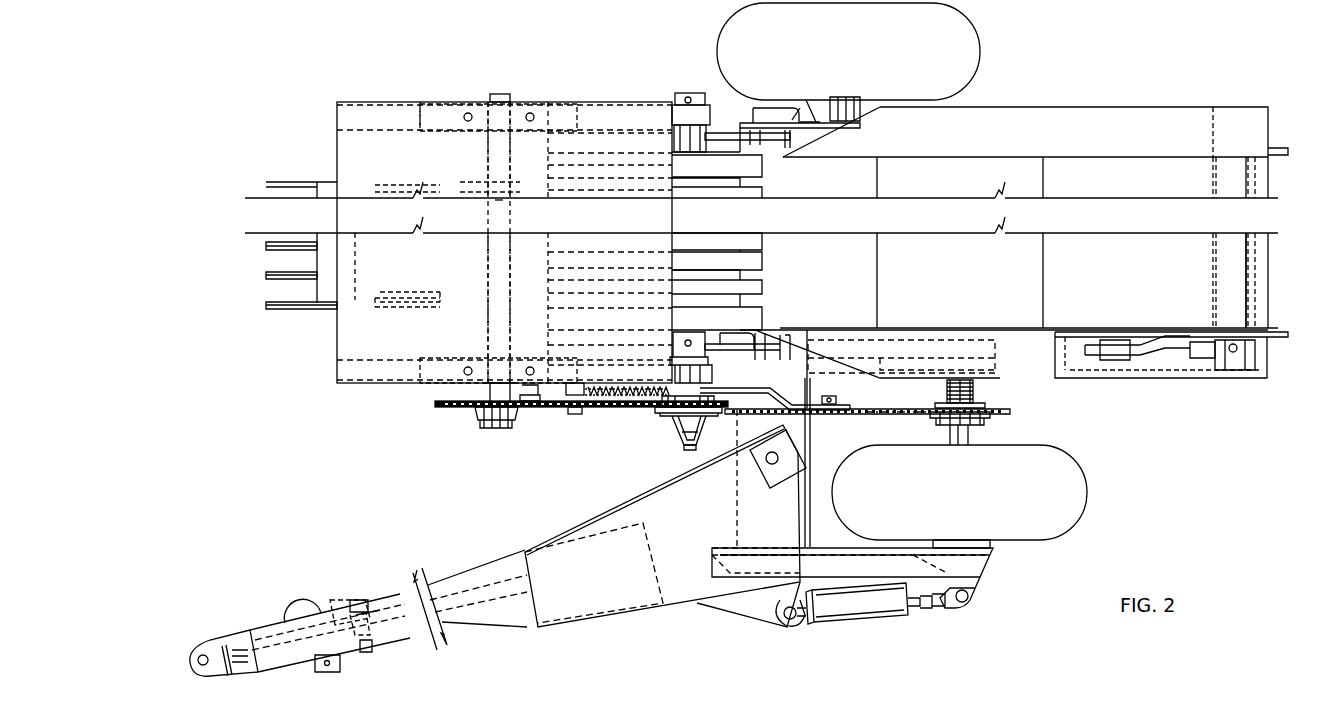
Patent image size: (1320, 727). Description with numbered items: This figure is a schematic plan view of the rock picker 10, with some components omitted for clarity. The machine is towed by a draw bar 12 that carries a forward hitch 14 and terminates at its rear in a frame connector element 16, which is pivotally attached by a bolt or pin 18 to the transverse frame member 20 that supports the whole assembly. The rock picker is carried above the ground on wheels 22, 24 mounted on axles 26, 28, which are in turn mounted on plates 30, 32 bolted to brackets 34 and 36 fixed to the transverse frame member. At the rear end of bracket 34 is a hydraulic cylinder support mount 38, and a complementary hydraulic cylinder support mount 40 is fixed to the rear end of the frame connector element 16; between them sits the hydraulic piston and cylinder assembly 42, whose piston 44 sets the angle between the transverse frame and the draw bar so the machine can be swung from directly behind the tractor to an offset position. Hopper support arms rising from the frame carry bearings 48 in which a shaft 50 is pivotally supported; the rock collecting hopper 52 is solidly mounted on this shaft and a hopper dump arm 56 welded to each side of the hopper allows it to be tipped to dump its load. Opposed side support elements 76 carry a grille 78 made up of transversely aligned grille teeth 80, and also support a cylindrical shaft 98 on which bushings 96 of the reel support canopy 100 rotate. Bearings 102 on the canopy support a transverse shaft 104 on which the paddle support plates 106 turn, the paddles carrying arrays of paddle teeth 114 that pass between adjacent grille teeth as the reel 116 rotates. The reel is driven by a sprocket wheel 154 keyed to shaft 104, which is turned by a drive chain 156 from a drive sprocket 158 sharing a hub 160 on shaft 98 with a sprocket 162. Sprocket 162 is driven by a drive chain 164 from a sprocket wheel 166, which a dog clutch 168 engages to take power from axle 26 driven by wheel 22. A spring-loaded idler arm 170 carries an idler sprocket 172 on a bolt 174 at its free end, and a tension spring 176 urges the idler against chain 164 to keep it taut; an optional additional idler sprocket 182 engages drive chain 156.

The rock picker 10 is at (704, 635).
The draw bar 12 is at (476, 556).
The forward hitch 14 is at (199, 643).
The frame connector element 16 is at (600, 526).
The bolt or pin 18 is at (785, 470).
The transverse frame member 20 is at (811, 495).
The wheel 22 is at (1060, 452).
The wheel 24 is at (978, 59).
The axle 26 is at (968, 436).
The axle 28 is at (850, 96).
The plate 30 is at (991, 542).
The plate 32 is at (850, 115).
The bracket 34 is at (817, 348).
The bracket 36 is at (818, 82).
The hydraulic cylinder support mount 38 is at (976, 578).
The hydraulic cylinder support mount 40 is at (756, 608).
The hydraulic piston and cylinder assembly 42 is at (876, 616).
The piston 44 is at (935, 606).
The bearing 48 is at (1268, 350).
The shaft 50 is at (1238, 295).
The rock collecting hopper 52 is at (1200, 272).
The hopper dump arm 56 is at (1148, 352).
The side support element 76 is at (723, 112).
The grille 78 is at (742, 288).
The grille tooth 80 is at (762, 264).
The bushing 96 is at (710, 96).
The cylindrical shaft 98 is at (670, 92).
The reel support canopy 100 is at (609, 100).
The bearing 102 is at (484, 72).
The transverse shaft 104 is at (486, 261).
The paddle support plate 106 is at (452, 194).
The paddle teeth 114 is at (276, 276).
The reel 116 is at (325, 329).
The sprocket wheel 154 is at (480, 408).
The drive chain 156 is at (546, 410).
The drive sprocket 158 is at (657, 415).
The hub 160 is at (684, 448).
The sprocket 162 is at (668, 424).
The drive chain 164 is at (871, 408).
The sprocket wheel 166 is at (986, 414).
The dog clutch 168 is at (942, 404).
The idler arm 170 is at (781, 402).
The idler sprocket 172 is at (826, 408).
The bolt 174 is at (856, 412).
The tension spring 176 is at (604, 412).
The idler sprocket 182 is at (574, 406).